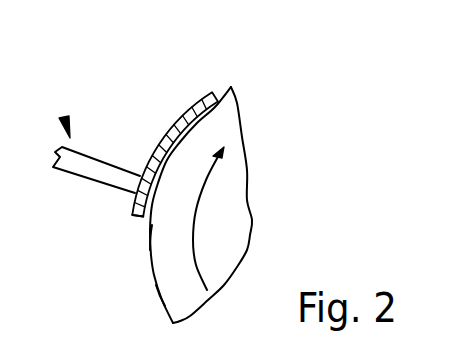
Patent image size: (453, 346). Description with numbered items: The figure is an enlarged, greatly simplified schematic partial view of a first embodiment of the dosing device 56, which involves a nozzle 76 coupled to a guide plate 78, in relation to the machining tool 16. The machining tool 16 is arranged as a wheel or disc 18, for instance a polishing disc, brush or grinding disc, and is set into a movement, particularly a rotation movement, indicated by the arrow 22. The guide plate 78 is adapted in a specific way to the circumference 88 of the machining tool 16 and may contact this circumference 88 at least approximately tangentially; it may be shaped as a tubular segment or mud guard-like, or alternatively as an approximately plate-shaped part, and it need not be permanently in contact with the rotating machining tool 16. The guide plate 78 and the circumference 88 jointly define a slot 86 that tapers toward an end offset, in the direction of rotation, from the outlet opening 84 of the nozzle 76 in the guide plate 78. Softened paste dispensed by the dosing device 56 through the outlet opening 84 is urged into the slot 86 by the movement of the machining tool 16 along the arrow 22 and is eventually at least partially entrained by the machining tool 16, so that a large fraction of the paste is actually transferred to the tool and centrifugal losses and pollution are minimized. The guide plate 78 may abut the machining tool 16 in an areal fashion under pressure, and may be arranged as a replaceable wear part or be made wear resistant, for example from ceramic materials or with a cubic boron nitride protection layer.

The machining tool 16 is at (235, 195).
The wheel or disc 18 is at (222, 123).
The arrow 22 is at (195, 232).
The dosing device 56 is at (65, 115).
The nozzle 76 is at (115, 177).
The guide plate 78 is at (177, 135).
The outlet opening 84 is at (137, 190).
The slot 86 is at (147, 230).
The circumference 88 is at (156, 297).